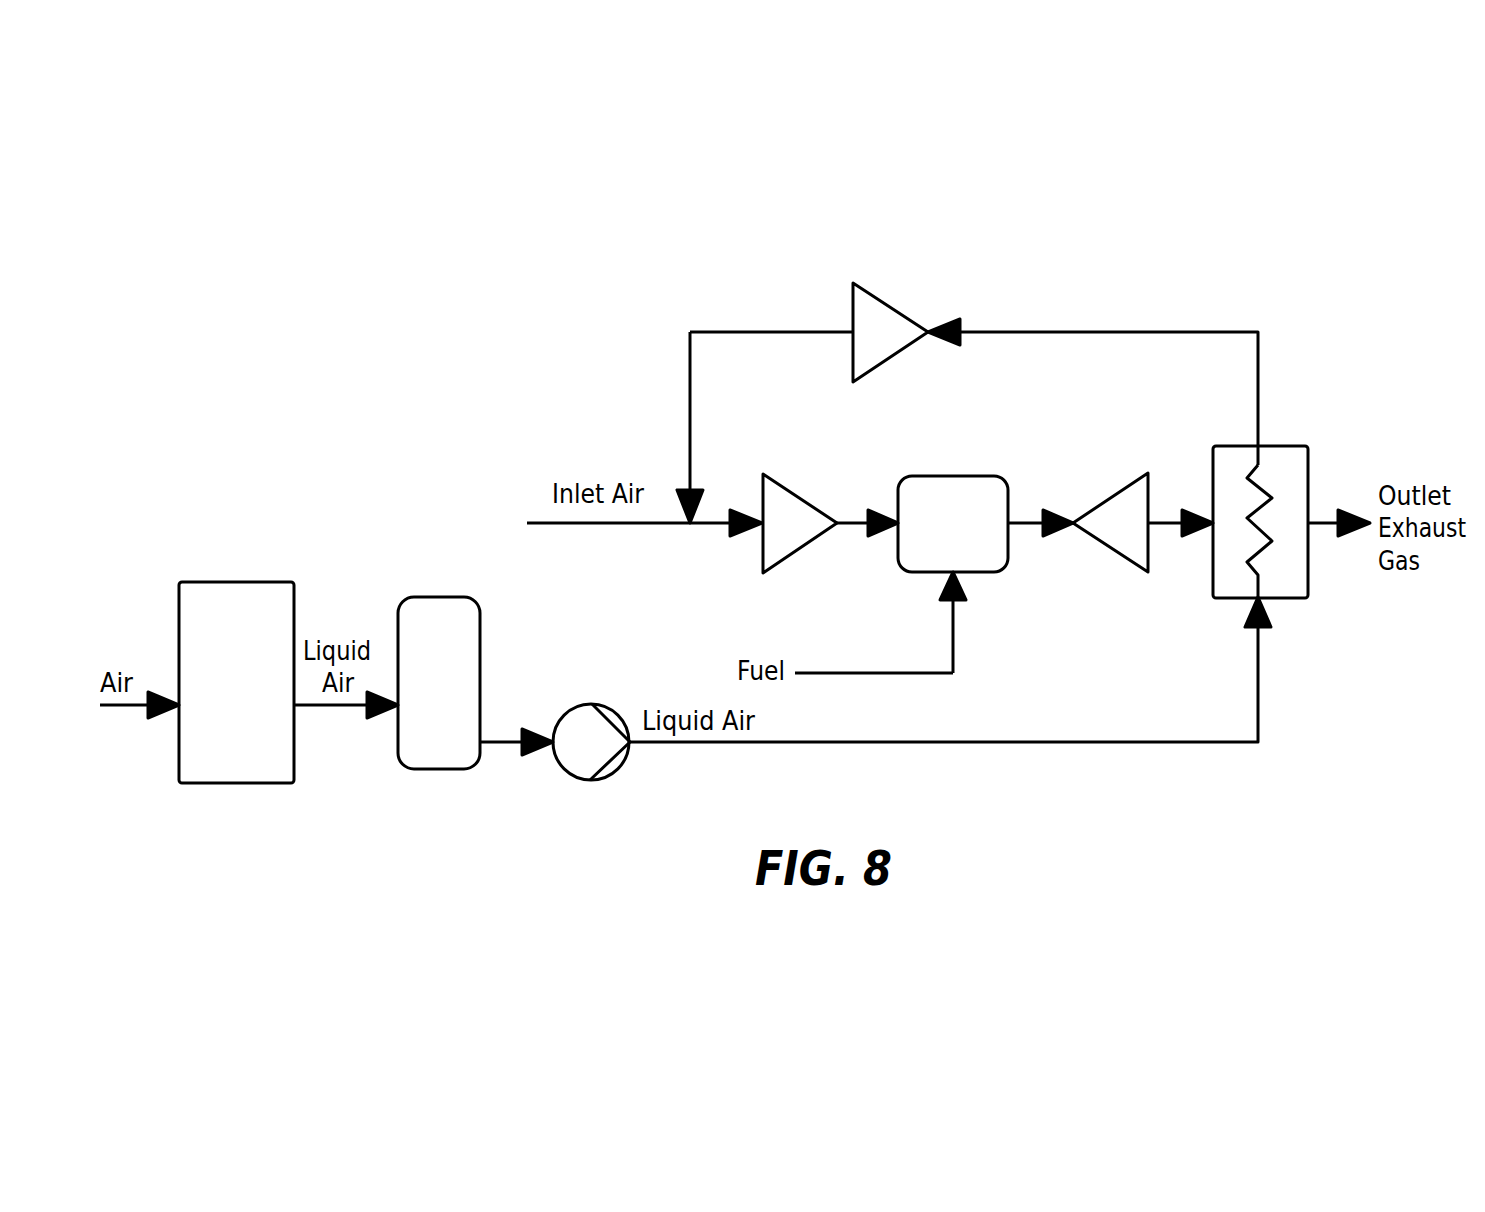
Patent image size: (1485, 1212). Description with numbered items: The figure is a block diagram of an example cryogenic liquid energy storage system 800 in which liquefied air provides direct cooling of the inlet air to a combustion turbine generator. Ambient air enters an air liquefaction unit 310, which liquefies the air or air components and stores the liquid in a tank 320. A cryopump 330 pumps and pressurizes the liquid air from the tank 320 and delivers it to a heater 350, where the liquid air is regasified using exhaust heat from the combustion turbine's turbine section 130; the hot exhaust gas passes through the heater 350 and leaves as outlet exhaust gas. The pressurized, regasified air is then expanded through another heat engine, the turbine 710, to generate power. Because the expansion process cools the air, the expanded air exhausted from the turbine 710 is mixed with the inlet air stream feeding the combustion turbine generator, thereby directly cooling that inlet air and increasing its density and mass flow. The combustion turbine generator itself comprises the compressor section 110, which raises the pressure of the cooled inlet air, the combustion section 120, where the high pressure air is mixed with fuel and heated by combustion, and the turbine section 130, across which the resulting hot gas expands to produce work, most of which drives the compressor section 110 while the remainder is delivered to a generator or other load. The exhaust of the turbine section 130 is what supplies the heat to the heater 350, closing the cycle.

The cryogenic liquid energy storage system 800 is at (288, 364).
The air liquefaction unit 310 is at (179, 628).
The tank 320 is at (397, 628).
The cryopump 330 is at (553, 760).
The compressor section 110 is at (760, 543).
The combustion section 120 is at (898, 543).
The turbine section 130 is at (1102, 540).
The heater 350 is at (1213, 570).
The turbine 710 is at (852, 345).